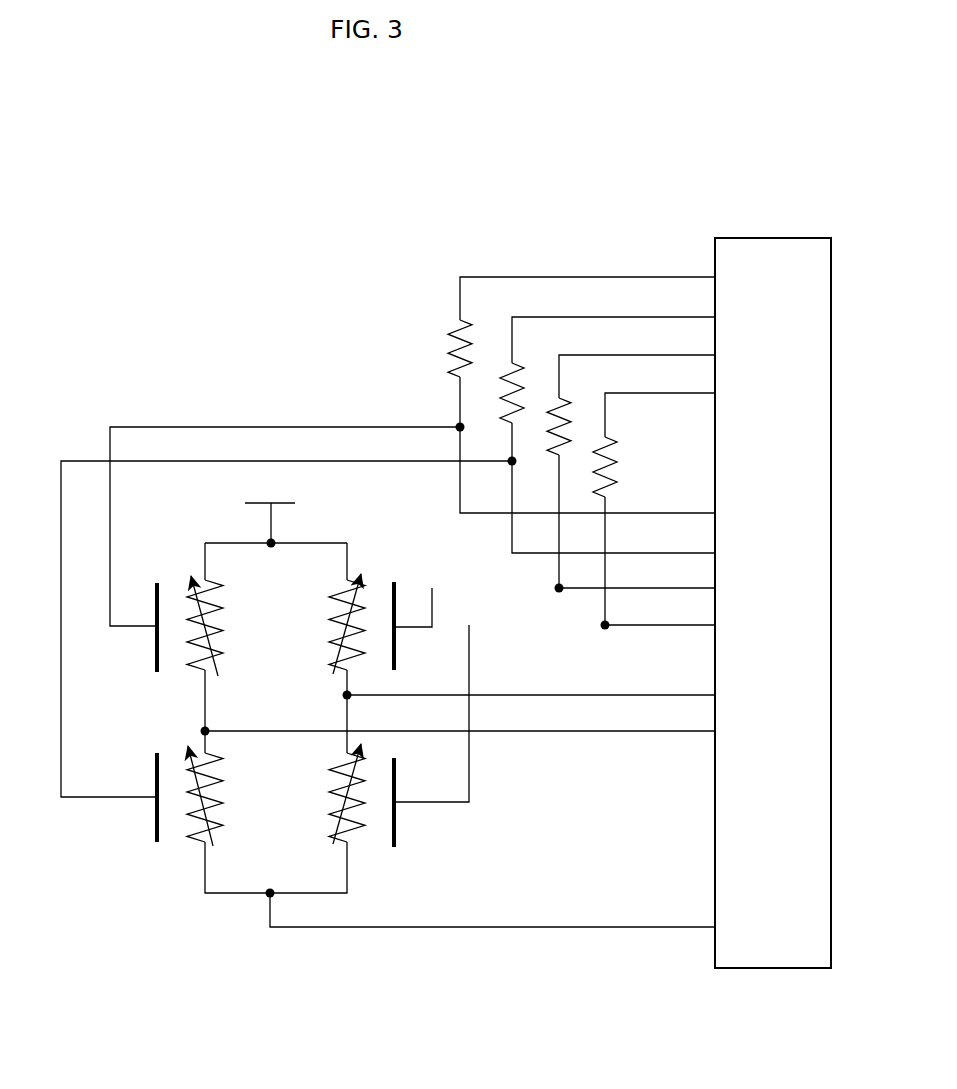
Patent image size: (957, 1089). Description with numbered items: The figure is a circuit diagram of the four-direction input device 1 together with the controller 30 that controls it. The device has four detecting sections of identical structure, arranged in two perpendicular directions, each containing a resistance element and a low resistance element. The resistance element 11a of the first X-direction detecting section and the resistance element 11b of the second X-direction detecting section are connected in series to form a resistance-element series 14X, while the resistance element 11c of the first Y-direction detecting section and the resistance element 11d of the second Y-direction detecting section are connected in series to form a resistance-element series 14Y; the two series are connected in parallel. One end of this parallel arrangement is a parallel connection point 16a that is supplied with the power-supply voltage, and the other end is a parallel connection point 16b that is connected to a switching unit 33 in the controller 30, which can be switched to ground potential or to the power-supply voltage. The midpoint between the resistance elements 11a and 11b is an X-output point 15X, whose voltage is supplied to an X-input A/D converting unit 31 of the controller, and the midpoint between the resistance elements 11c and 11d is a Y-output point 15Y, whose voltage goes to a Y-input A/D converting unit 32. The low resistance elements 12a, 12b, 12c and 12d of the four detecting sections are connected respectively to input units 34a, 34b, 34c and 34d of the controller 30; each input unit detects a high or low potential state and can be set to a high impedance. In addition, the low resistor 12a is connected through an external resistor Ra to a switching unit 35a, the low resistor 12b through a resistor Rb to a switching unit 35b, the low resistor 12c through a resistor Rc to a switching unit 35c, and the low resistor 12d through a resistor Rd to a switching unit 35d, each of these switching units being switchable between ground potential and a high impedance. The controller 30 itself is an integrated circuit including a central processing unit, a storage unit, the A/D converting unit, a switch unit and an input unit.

The four-direction input device 1 is at (536, 190).
The controller 30 is at (831, 388).
The X-input A/D converting unit 31 is at (715, 695).
The Y-input A/D converting unit 32 is at (715, 733).
The switching unit 33 is at (715, 927).
The input unit 34a is at (715, 588).
The input unit 34b is at (715, 625).
The input unit 34c is at (715, 513).
The input unit 34d is at (715, 553).
The switching unit 35a is at (715, 355).
The switching unit 35b is at (715, 393).
The switching unit 35c is at (715, 277).
The switching unit 35d is at (715, 317).
The resistance element 11a is at (330, 614).
The resistance element 11b is at (330, 804).
The resistance element 11c is at (224, 610).
The resistance element 11d is at (224, 792).
The low resistance element 12a is at (396, 598).
The low resistance element 12b is at (397, 831).
The low resistance element 12c is at (155, 667).
The low resistance element 12d is at (155, 832).
The resistance-element series 14X is at (385, 728).
The resistance-element series 14Y is at (182, 756).
The X-output point 15X is at (344, 695).
The Y-output point 15Y is at (202, 730).
The parallel connection point 16a is at (262, 541).
The parallel connection point 16b is at (266, 897).
The external resistor Ra is at (588, 398).
The resistor Rb is at (617, 458).
The resistor Rc is at (448, 349).
The resistor Rd is at (524, 372).